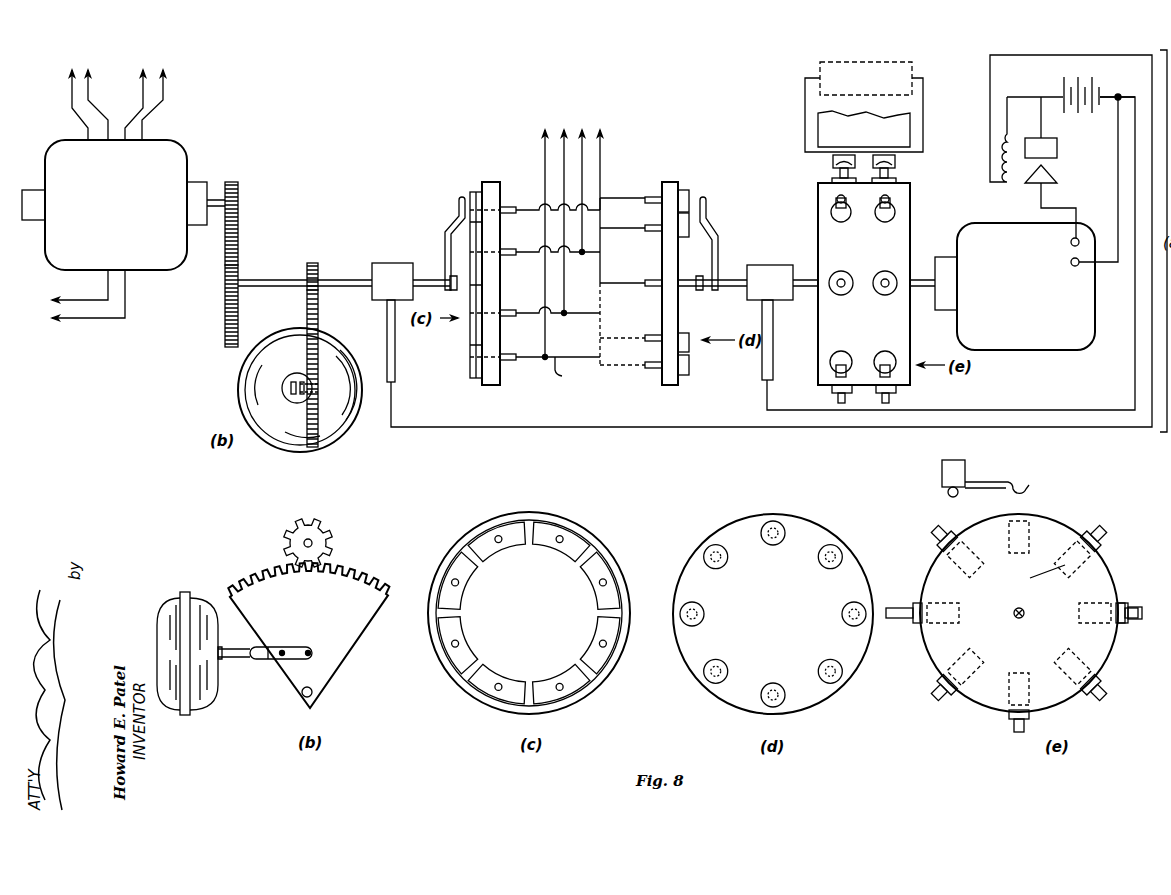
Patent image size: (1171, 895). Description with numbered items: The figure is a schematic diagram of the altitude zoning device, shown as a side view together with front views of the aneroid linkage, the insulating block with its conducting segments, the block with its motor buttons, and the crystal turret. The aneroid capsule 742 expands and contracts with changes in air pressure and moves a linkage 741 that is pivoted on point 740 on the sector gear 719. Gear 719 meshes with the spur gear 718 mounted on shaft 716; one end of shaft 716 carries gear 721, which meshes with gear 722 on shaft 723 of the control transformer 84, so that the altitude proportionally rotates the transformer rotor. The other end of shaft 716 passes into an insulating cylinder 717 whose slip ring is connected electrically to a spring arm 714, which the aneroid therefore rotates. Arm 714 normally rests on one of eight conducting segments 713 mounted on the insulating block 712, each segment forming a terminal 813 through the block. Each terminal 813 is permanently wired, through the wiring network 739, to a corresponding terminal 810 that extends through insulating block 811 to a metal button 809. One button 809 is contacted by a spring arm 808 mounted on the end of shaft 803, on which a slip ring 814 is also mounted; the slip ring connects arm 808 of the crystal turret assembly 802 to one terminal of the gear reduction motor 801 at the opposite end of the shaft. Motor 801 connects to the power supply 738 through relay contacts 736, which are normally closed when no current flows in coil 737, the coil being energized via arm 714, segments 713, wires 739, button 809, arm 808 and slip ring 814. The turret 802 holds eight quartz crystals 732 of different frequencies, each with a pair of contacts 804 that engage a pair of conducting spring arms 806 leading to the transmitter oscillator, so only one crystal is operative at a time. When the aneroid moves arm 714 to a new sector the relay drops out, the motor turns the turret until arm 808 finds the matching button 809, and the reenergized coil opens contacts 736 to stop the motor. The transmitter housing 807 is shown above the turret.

The control transformer 84 is at (186, 148).
The shaft 723 is at (216, 198).
The gear 722 is at (240, 196).
The gear 721 is at (240, 256).
The shaft 716 is at (350, 280).
The spur gear 718 is at (320, 268).
The insulating cylinder 717 is at (392, 263).
The gear 719 is at (320, 322).
The aneroid capsule 742 is at (240, 405).
The linkage 741 is at (290, 386).
The pivot point 740 is at (304, 400).
The spring arm 714 is at (452, 222).
The conducting segments 713 is at (474, 192).
The insulating block 712 is at (490, 182).
The terminal 813 is at (512, 207).
The wiring network 739 is at (574, 373).
The terminal 810 is at (650, 197).
The insulating block 811 is at (670, 182).
The metal button 809 is at (690, 192).
The spring arm 808 is at (718, 232).
The slip ring 814 is at (768, 265).
The crystal turret assembly 802 is at (812, 238).
The quartz crystals 732 is at (1045, 576).
The conducting spring arms 806 is at (834, 160).
The contacts 804 is at (900, 180).
The transmitter unit 807 is at (912, 136).
The shaft 803 is at (920, 275).
The gear reduction motor 801 is at (1003, 222).
The power supply 738 is at (1062, 84).
The relay coil 737 is at (1001, 142).
The relay contacts 736 is at (1068, 158).